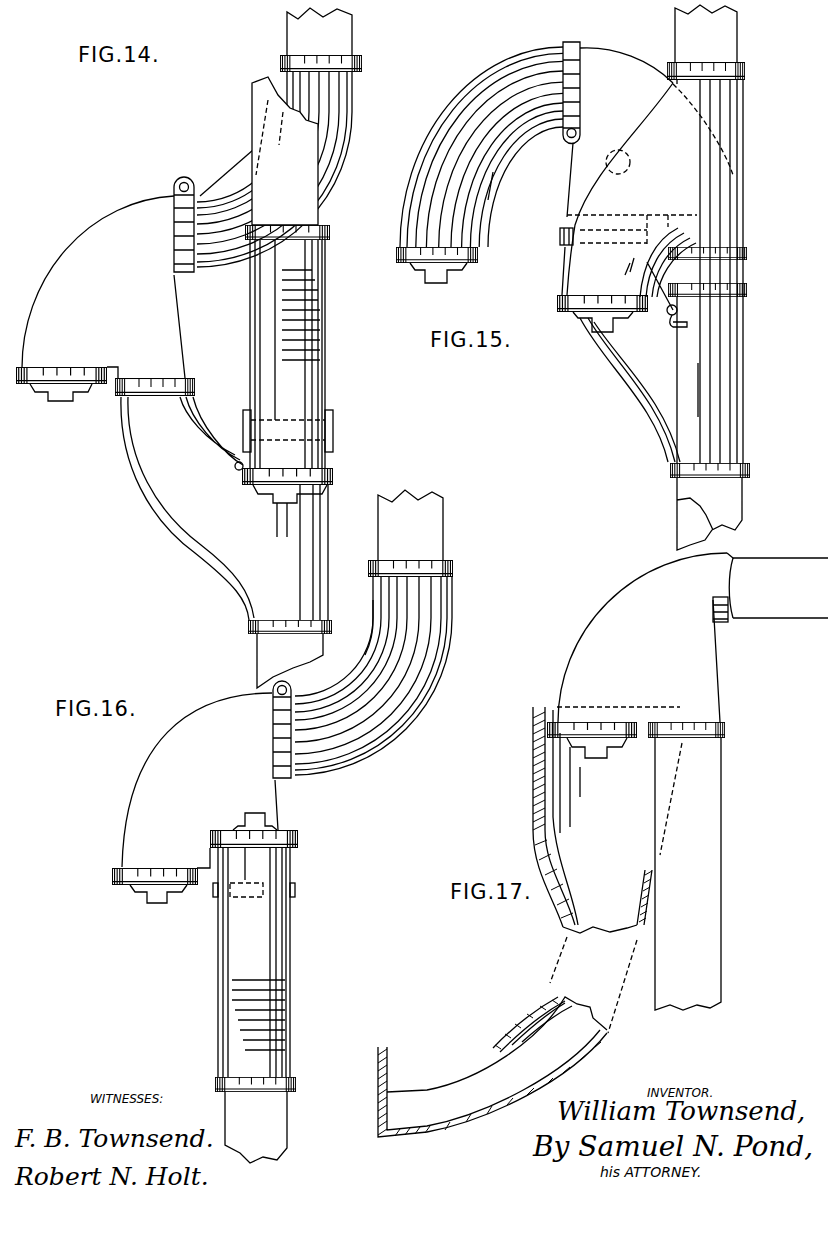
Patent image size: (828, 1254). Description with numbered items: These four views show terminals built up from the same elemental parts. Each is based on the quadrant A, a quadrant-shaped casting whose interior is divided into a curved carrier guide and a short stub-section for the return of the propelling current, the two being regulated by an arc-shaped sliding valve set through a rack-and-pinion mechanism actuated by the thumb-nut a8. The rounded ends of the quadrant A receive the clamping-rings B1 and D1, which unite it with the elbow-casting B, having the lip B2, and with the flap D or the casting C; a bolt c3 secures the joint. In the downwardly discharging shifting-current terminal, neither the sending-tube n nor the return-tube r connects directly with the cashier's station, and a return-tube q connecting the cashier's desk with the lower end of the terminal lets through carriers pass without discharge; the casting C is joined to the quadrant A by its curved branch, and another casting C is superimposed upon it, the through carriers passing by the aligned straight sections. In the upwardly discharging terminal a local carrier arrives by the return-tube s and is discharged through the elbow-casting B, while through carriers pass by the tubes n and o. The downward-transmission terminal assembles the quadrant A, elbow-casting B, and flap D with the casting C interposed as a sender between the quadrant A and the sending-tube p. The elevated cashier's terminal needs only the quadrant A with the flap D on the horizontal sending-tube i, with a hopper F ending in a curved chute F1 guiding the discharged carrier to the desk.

In FIG. 14, the quadrant A is at (108, 296).
In FIG. 16, the quadrant A is at (200, 780).
In FIG. 15, the quadrant A is at (628, 171).
In FIG. 17, the quadrant A is at (645, 781).
In FIG. 14, the elbow-casting B is at (279, 161).
In FIG. 16, the elbow-casting B is at (374, 667).
In FIG. 15, the elbow-casting B is at (481, 147).
In FIG. 14, the clamping-ring B1 is at (183, 181).
In FIG. 16, the clamping-ring B1 is at (292, 778).
In FIG. 15, the clamping-ring B1 is at (570, 41).
In FIG. 14, the lip of elbow end B2 is at (243, 170).
In FIG. 16, the lip of elbow end B2 is at (366, 619).
In FIG. 15, the lip of elbow end B2 is at (494, 175).
In FIG. 14, the casting C is at (227, 429).
In FIG. 16, the casting C is at (254, 961).
In FIG. 15, the casting C is at (665, 270).
In FIG. 14, the flap D is at (65, 402).
In FIG. 16, the flap D is at (157, 891).
In FIG. 15, the flap D is at (425, 280).
In FIG. 17, the flap D is at (597, 759).
In FIG. 14, the clamping-ring D1 is at (58, 370).
In FIG. 16, the clamping-ring D1 is at (211, 842).
In FIG. 15, the clamping-ring D1 is at (410, 250).
In FIG. 17, the clamping-ring D1 is at (600, 722).
In FIG. 15, the thumb-nut a8 is at (612, 163).
In FIG. 15, the bolt fastening c3 is at (677, 331).
In FIG. 17, the hopper F is at (607, 820).
In FIG. 17, the curved chute F1 is at (507, 1037).
In FIG. 17, the sending-tube i is at (770, 590).
In FIG. 14, the sending-tube n is at (285, 151).
In FIG. 15, the sending-tube n is at (709, 514).
In FIG. 16, the tube o is at (410, 525).
In FIG. 15, the tube o is at (706, 33).
In FIG. 16, the sending-tube p is at (256, 1127).
In FIG. 14, the return-tube q is at (290, 661).
In FIG. 14, the return-tube r is at (319, 29).
In FIG. 15, the return-tube s is at (686, 520).